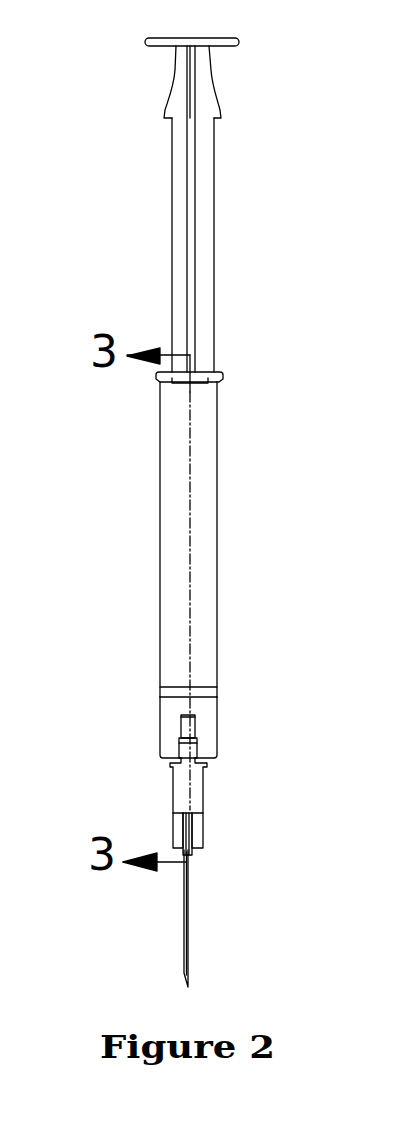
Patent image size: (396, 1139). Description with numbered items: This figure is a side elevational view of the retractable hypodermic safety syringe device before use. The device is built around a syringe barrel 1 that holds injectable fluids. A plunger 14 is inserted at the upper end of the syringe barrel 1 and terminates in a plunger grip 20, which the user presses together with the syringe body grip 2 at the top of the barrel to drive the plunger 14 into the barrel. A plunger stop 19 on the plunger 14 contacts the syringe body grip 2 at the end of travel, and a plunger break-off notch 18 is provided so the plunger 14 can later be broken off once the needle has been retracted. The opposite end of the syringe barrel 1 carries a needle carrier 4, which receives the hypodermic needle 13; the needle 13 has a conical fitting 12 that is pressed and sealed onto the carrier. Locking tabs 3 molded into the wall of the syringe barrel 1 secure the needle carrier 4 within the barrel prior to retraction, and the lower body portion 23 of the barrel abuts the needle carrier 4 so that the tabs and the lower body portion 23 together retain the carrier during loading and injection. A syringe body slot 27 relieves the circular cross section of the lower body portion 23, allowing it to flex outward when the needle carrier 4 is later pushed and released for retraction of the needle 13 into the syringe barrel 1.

The syringe barrel 1 is at (163, 545).
The syringe body grip 2 is at (223, 377).
The locking tabs 3 is at (183, 725).
The needle carrier 4 is at (207, 748).
The conical fitting 12 is at (192, 817).
The hypodermic needle 13 is at (190, 937).
The plunger 14 is at (215, 97).
The plunger break-off notch 18 is at (210, 372).
The plunger stop 19 is at (218, 118).
The plunger grip 20 is at (228, 38).
The lower body portion 23 is at (213, 733).
The syringe body slot 27 is at (183, 737).